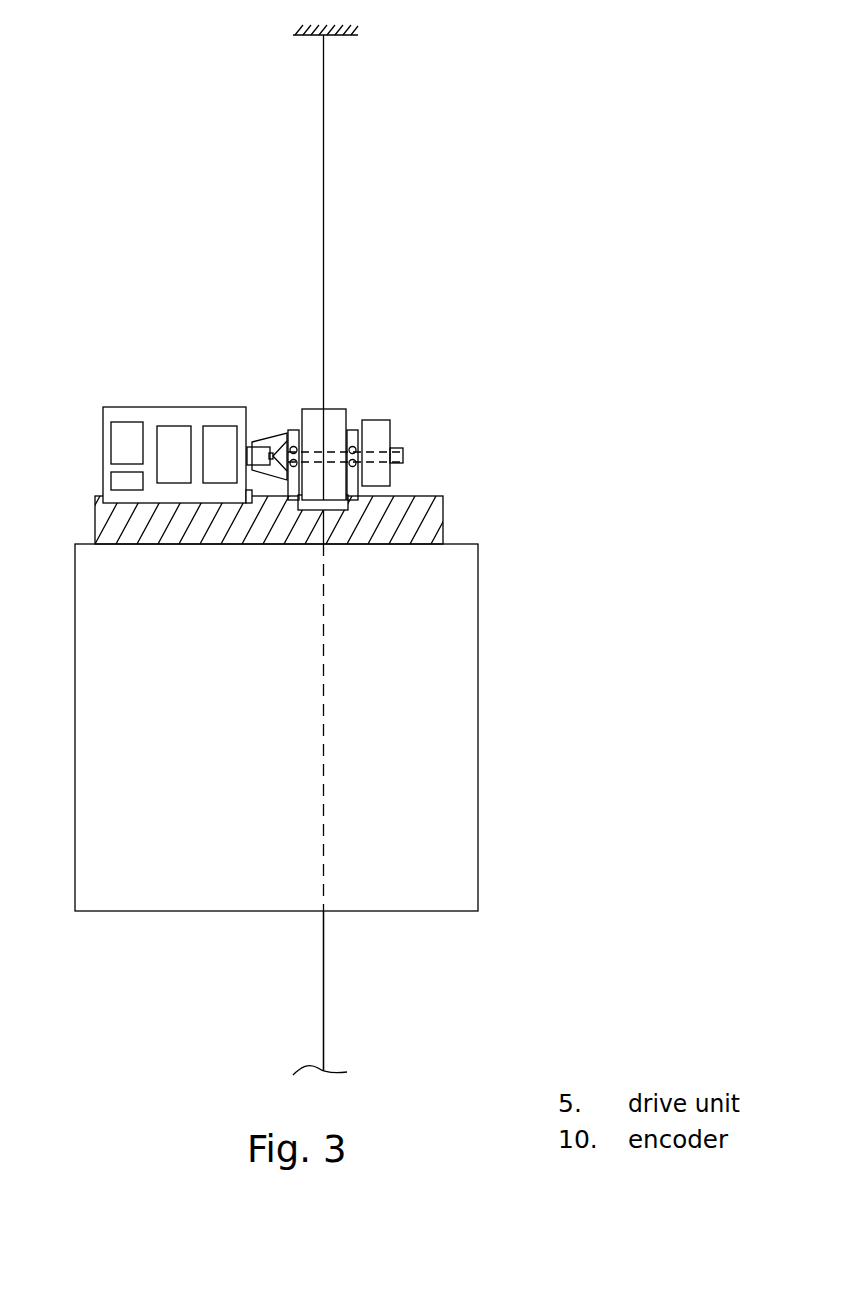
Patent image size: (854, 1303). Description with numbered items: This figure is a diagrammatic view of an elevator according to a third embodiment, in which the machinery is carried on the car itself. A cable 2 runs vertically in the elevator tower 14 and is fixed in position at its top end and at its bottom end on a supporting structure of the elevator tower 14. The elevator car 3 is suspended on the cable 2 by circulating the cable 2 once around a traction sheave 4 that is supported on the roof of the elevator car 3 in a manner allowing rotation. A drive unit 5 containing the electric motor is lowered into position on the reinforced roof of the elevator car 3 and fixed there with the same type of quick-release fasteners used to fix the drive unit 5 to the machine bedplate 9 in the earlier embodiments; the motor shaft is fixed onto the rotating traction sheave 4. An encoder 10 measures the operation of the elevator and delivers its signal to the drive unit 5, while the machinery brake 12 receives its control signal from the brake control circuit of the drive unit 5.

The cable 2 is at (323, 167).
The elevator car 3 is at (258, 730).
The traction sheave 4 is at (328, 410).
The drive unit 5 is at (187, 407).
The machine bedplate 9 is at (402, 513).
The encoder 10 is at (403, 455).
The machinery brake 12 is at (380, 420).
The elevator tower 14 is at (275, 979).